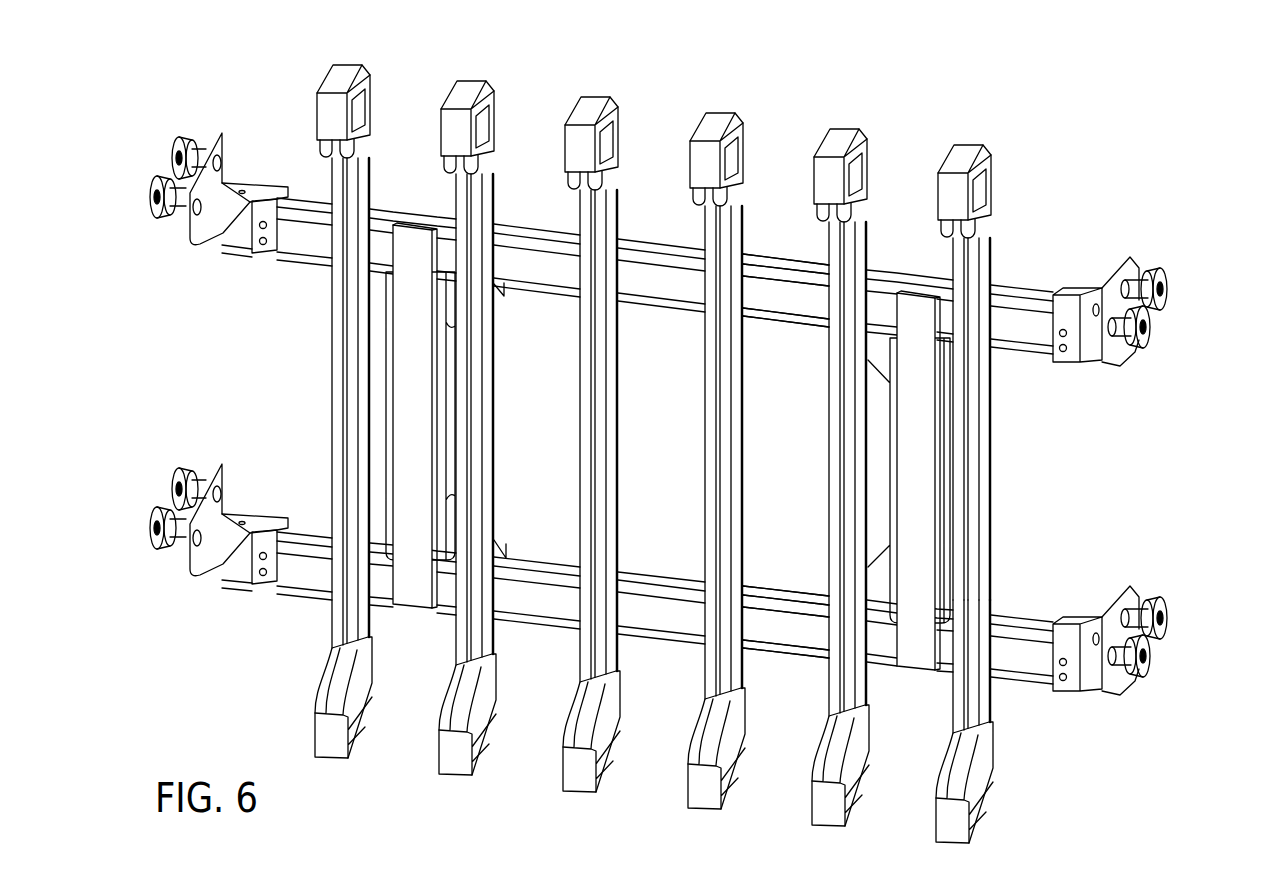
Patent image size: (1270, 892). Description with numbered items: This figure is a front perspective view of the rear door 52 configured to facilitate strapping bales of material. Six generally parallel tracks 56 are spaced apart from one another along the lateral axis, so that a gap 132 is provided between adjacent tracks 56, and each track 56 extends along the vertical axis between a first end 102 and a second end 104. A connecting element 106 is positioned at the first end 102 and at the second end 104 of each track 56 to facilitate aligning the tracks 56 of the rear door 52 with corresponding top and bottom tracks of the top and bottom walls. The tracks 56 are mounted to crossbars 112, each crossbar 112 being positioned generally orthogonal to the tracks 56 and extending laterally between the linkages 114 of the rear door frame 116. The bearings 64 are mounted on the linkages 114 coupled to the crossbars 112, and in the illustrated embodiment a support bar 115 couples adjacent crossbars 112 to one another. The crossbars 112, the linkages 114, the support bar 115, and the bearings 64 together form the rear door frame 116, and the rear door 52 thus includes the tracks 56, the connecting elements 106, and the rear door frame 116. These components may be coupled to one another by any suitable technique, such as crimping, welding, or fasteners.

The rear door 52 is at (690, 466).
The tracks 56 is at (973, 490).
The bearings 64 is at (1168, 282).
The first end 102 is at (985, 259).
The second end 104 is at (993, 712).
The connecting elements 106 is at (966, 148).
The crossbar 112 is at (1030, 336).
The linkage 114 is at (1141, 300).
The support bar 115 is at (412, 390).
The rear door frame 116 is at (1117, 706).
The gap 132 is at (793, 373).